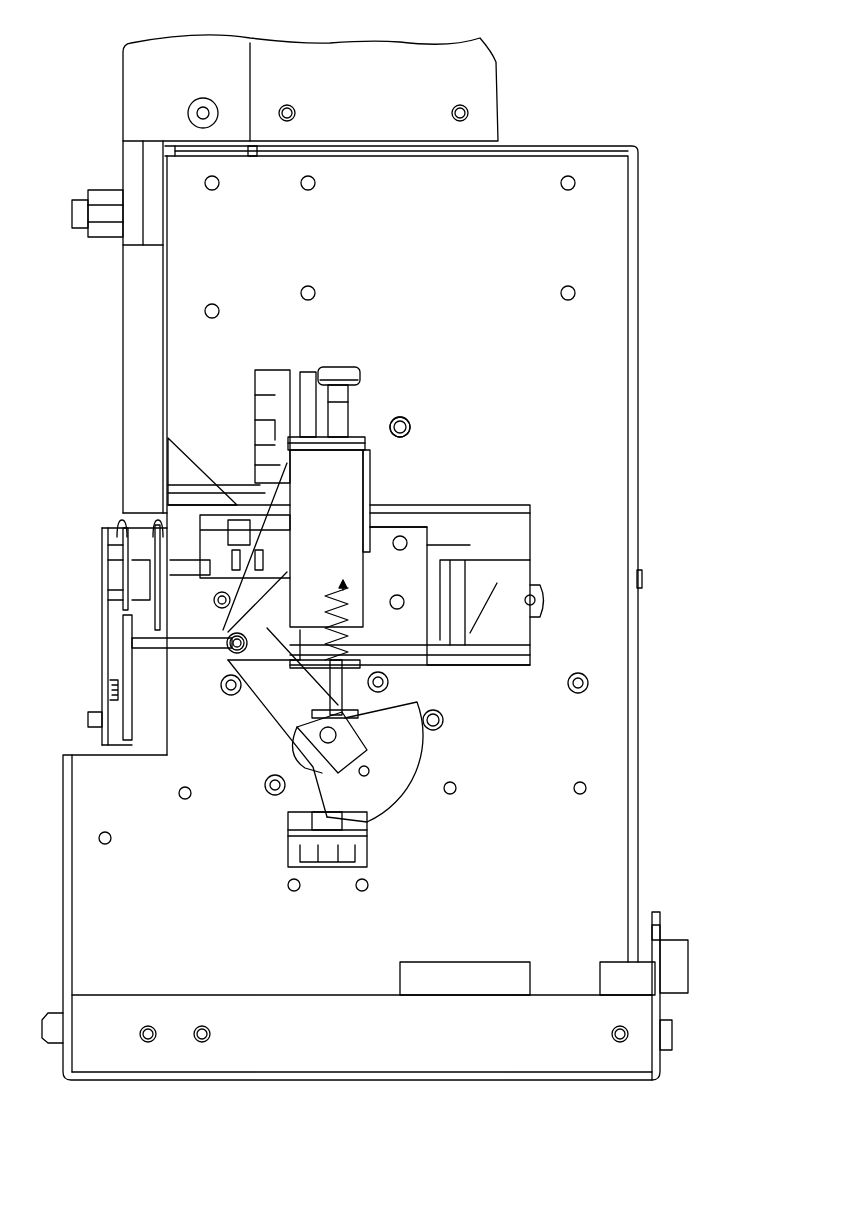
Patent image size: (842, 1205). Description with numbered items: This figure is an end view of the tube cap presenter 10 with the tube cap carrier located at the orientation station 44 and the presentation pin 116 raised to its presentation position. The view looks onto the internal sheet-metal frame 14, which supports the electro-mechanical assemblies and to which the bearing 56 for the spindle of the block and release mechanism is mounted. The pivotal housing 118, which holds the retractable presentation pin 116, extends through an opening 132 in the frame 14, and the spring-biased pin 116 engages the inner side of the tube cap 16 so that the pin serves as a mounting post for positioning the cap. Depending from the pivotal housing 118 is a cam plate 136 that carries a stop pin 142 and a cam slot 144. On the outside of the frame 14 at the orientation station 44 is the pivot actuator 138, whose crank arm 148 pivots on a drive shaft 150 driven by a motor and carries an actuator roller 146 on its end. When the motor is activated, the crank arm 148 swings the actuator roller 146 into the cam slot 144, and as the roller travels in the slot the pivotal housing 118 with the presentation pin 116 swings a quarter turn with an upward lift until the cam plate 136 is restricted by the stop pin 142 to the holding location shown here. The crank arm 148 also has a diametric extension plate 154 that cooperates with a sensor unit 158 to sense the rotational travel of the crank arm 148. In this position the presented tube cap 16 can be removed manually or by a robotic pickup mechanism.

The tube cap presenter 10 is at (652, 208).
The internal sheet-metal frame 14 is at (608, 463).
The tube cap 16 is at (363, 376).
The presentation pin 116 is at (350, 413).
The bearing 56 is at (410, 434).
The pivotal housing 118 is at (360, 487).
The opening 132 is at (522, 548).
The stop pin 142 is at (215, 600).
The cam slot 144 is at (268, 607).
The cam plate 136 is at (288, 578).
The actuator roller 146 is at (228, 640).
The crank arm 148 is at (257, 697).
The pivot actuator 138 is at (283, 733).
The drive shaft 150 is at (340, 740).
The diametric extension plate 154 is at (405, 797).
The sensor unit 158 is at (375, 822).
The orientation station 44 is at (329, 665).